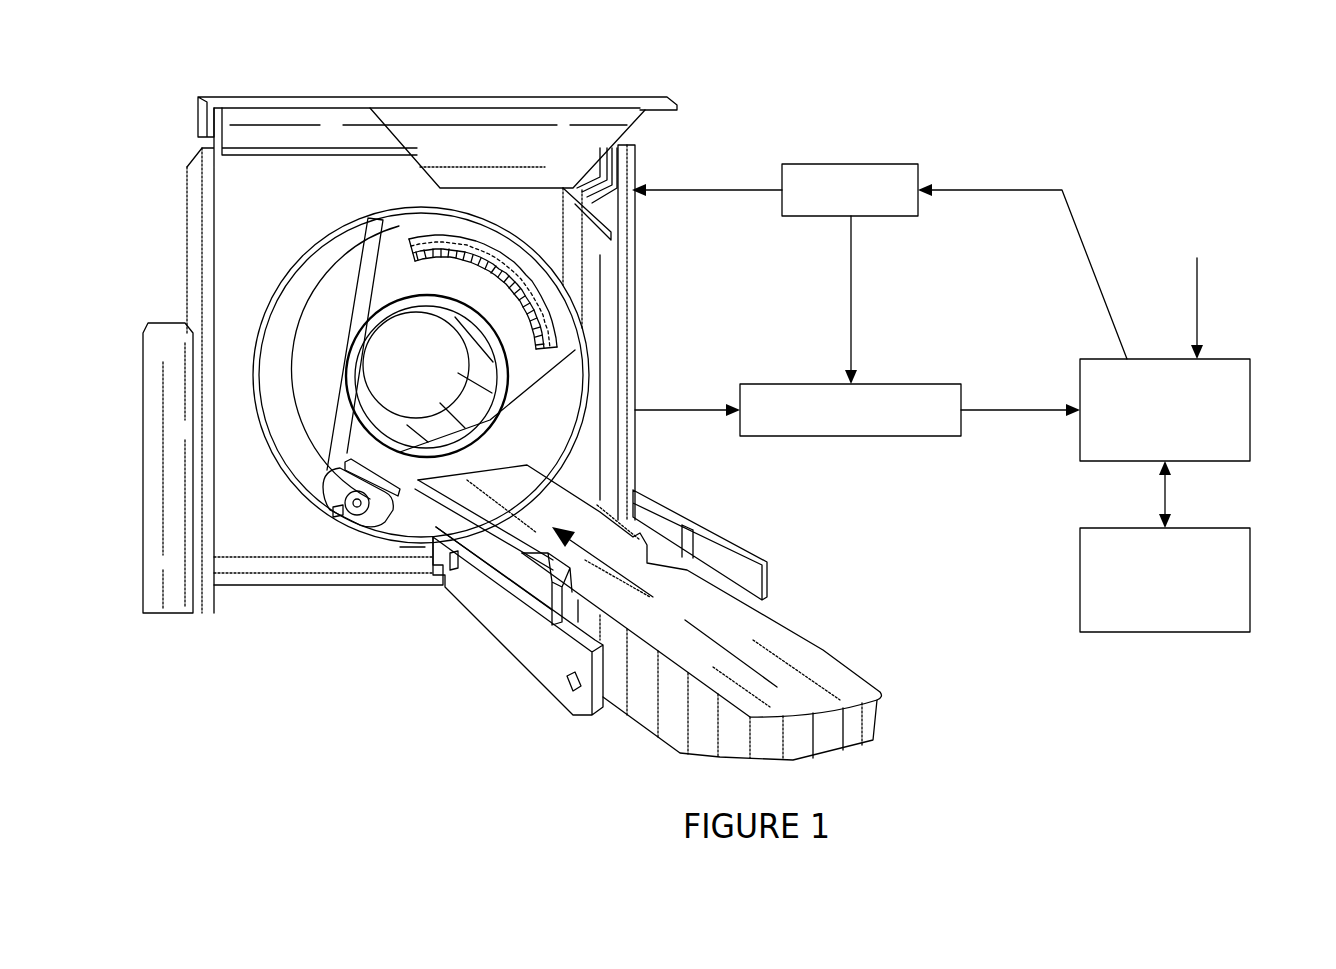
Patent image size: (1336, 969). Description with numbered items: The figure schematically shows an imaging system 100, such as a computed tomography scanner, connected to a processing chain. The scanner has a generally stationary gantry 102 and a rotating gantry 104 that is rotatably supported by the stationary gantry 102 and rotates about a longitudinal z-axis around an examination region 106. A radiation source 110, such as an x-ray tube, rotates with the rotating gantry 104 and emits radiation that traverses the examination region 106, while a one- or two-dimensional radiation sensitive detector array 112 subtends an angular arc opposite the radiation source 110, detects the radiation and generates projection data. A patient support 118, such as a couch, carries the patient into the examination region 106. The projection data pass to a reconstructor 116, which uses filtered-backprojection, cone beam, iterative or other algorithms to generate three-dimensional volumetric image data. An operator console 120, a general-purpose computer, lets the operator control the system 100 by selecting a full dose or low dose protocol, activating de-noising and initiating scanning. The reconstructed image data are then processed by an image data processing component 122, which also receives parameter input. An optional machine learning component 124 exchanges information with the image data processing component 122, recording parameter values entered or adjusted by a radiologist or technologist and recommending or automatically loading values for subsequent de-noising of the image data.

The imaging system 100 is at (1052, 118).
The stationary gantry 102 is at (207, 223).
The rotating gantry 104 is at (385, 280).
The examination region 106 is at (428, 386).
The radiation source 110 is at (352, 512).
The radiation sensitive detector array 112 is at (540, 300).
The reconstructor 116 is at (851, 436).
The patient support 118 is at (862, 690).
The operator console 120 is at (851, 164).
The image data processing component 122 is at (1252, 400).
The machine learning component 124 is at (1170, 633).